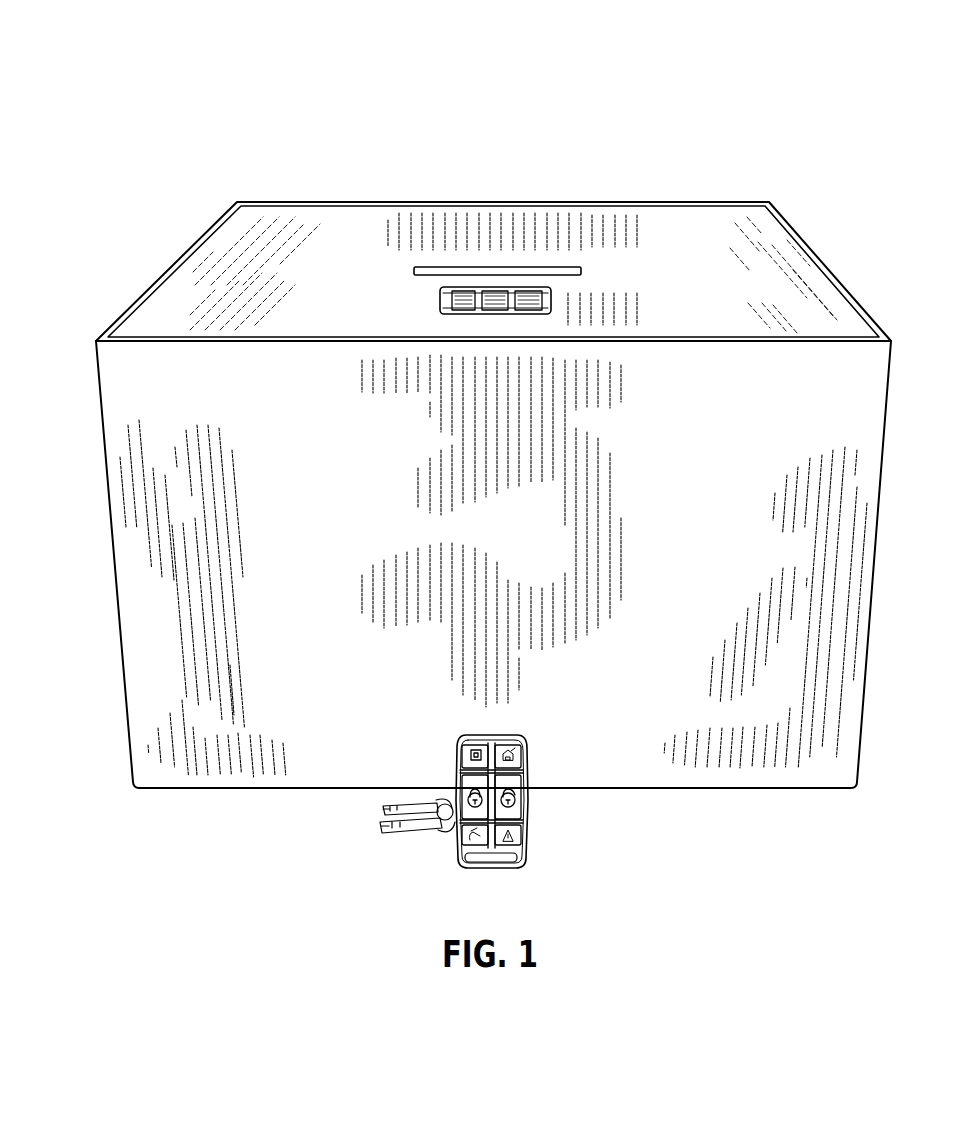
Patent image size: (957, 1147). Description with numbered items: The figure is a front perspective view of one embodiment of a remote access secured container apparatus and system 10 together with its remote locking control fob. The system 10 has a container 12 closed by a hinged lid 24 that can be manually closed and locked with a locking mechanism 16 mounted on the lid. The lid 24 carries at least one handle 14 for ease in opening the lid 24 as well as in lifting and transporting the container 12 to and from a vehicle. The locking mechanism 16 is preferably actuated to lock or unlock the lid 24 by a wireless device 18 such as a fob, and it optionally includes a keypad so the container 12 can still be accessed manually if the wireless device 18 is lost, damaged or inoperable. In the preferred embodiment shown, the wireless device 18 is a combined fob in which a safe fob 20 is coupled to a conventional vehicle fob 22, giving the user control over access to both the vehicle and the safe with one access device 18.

The secured container apparatus and system 10 is at (220, 67).
The container 12 is at (122, 377).
The handle 14 is at (420, 268).
The locking mechanism 16 is at (436, 304).
The wireless device 18 is at (538, 805).
The safe fob 20 is at (476, 742).
The vehicle fob 22 is at (512, 836).
The hinged lid 24 is at (777, 237).